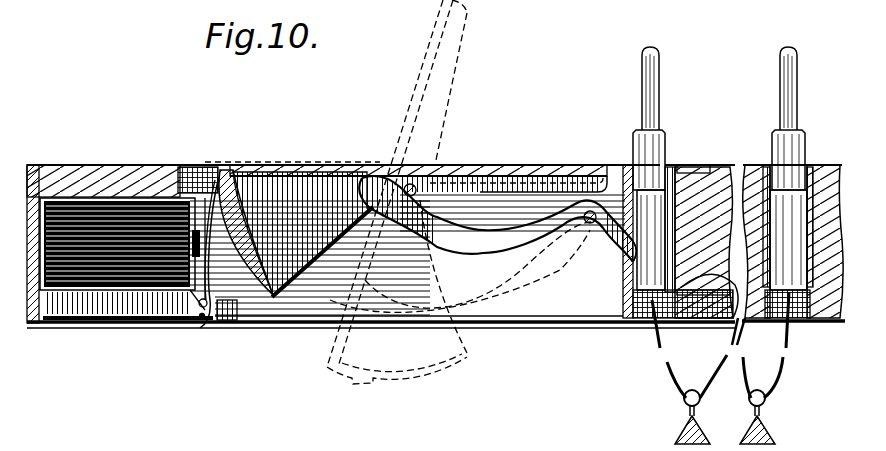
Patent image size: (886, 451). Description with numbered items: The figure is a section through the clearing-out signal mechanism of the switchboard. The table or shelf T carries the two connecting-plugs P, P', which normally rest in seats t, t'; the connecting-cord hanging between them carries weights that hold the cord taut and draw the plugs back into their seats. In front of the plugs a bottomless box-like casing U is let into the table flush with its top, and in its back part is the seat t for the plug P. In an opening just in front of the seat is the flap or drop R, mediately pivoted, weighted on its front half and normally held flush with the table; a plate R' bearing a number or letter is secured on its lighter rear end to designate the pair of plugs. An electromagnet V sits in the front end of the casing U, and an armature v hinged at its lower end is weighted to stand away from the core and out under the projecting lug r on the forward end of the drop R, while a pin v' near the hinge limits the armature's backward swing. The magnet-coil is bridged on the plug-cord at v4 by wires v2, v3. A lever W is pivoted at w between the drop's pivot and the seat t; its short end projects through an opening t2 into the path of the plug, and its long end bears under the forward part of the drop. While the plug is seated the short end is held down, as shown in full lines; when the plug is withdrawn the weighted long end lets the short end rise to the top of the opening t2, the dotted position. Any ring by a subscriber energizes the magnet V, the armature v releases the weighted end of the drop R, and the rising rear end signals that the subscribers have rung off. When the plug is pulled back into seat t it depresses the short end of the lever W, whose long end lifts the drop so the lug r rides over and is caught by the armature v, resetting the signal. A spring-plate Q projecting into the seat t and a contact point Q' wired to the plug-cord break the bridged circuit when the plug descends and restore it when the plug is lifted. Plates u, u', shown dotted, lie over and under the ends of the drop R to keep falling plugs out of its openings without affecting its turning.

The table or shelf T is at (436, 237).
The electromagnet V is at (117, 288).
The armature v is at (218, 252).
The pin v' is at (204, 322).
The wire v2 is at (543, 325).
The wire v3 is at (510, 325).
The bridging point on plug-cord v4 is at (760, 368).
The casing U is at (310, 307).
The plate u is at (228, 162).
The plate u' is at (404, 160).
The projecting lug r is at (226, 176).
The flap or drop R is at (350, 192).
The plate R' is at (418, 165).
The lever W is at (483, 244).
The pivot of lever W w is at (588, 220).
The plug-seat t is at (699, 225).
The plug-seat t' is at (793, 225).
The opening t2 is at (630, 252).
The connecting-plug P is at (651, 168).
The connecting-plug P' is at (794, 168).
The spring-plate Q is at (689, 372).
The contact plate or point Q' is at (707, 280).